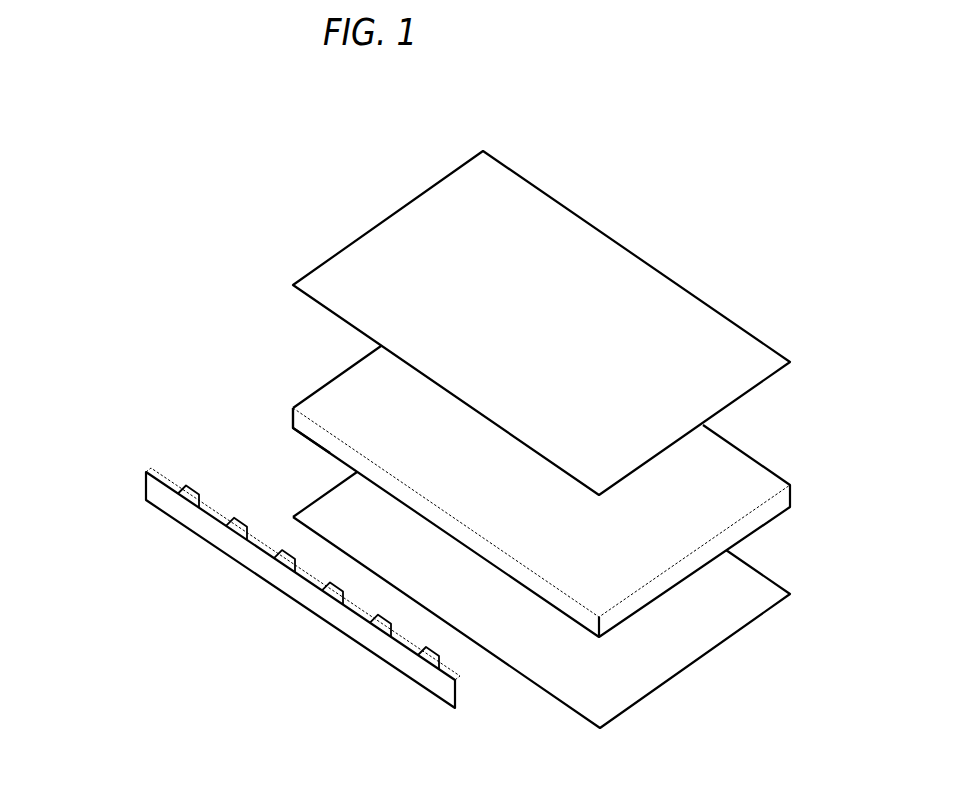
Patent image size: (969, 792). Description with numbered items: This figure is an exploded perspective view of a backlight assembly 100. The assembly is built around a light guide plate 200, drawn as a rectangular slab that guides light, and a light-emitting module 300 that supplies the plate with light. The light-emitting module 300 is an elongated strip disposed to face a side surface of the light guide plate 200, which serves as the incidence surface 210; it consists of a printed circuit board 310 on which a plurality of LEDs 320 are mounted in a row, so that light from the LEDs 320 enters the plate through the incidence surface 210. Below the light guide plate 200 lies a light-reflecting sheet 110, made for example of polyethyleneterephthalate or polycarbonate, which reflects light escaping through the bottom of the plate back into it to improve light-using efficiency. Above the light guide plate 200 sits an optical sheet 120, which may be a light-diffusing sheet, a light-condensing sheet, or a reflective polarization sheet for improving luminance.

The backlight assembly 100 is at (520, 430).
The light-reflecting sheet 110 is at (688, 668).
The optical sheet 120 is at (708, 345).
The light guide plate 200 is at (498, 468).
The incidence surface 210 is at (288, 427).
The light-emitting module 300 is at (251, 553).
The printed circuit board 310 is at (203, 525).
The LEDs 320 is at (187, 487).